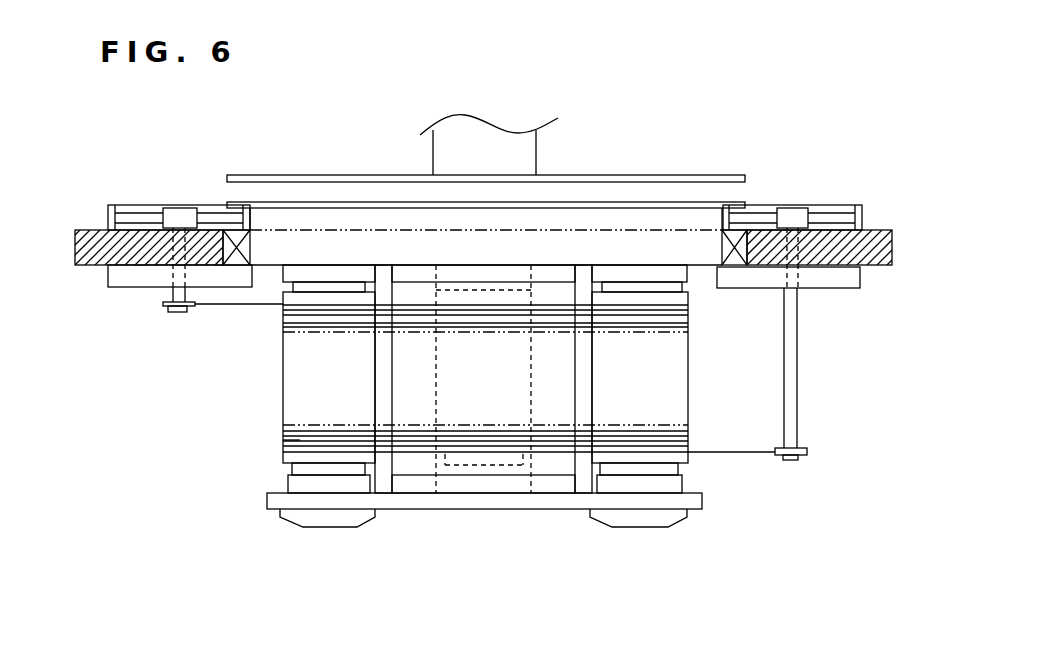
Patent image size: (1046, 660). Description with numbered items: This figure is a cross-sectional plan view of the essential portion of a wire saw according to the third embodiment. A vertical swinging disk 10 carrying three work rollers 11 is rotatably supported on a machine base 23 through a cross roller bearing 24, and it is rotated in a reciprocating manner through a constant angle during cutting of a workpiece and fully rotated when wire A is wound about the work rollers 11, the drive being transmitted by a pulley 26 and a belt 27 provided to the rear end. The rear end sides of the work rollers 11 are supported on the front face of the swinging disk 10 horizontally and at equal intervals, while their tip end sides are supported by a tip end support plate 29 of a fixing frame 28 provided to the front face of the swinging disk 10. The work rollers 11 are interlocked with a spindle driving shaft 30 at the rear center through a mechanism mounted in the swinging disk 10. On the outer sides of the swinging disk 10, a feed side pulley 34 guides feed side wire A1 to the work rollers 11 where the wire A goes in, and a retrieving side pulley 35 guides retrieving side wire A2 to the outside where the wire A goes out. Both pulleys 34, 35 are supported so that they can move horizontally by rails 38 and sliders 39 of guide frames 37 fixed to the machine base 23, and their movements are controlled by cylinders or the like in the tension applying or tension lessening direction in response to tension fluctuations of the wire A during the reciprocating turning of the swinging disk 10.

The vertical swinging disk 10 is at (328, 215).
The work rollers 11 is at (450, 383).
The machine base 23 is at (885, 263).
The cross roller bearing 24 is at (731, 264).
The pulley 26 is at (693, 178).
The belt 27 is at (619, 188).
The fixing frame 28 is at (545, 485).
The tip end support plate 29 is at (427, 500).
The spindle driving shaft 30 is at (510, 137).
The feed side pulley 34 is at (167, 312).
The retrieving side pulley 35 is at (805, 458).
The guide frames 37 is at (130, 280).
The rails 38 is at (135, 213).
The sliders 39 is at (178, 208).
The wire A is at (291, 440).
The feed side wire A1 is at (240, 304).
The retrieving side wire A2 is at (745, 452).